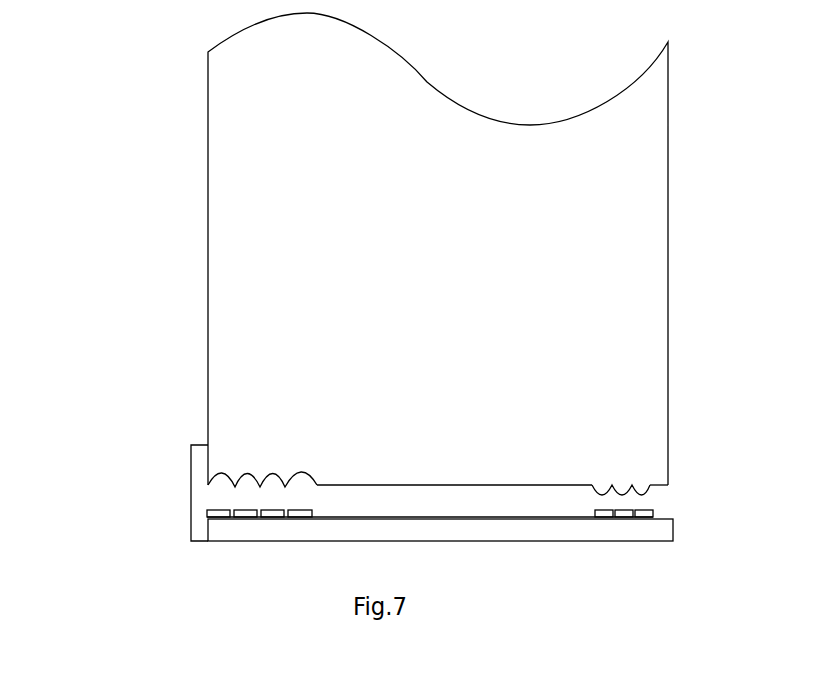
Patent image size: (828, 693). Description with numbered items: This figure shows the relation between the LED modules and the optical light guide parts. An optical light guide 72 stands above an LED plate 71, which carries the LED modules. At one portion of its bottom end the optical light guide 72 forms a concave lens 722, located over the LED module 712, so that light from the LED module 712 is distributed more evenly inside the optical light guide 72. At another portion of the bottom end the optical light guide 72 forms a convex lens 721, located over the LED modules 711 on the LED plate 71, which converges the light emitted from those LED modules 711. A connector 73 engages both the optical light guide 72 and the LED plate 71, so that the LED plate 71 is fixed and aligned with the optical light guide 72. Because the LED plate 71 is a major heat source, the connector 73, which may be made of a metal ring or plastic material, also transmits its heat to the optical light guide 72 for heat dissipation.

The LED plate 71 is at (673, 535).
The LED modules 711 is at (655, 515).
The LED module 712 is at (280, 517).
The optical light guide 72 is at (642, 219).
The convex lens 721 is at (622, 485).
The concave lens 722 is at (258, 485).
The connector 73 is at (193, 483).